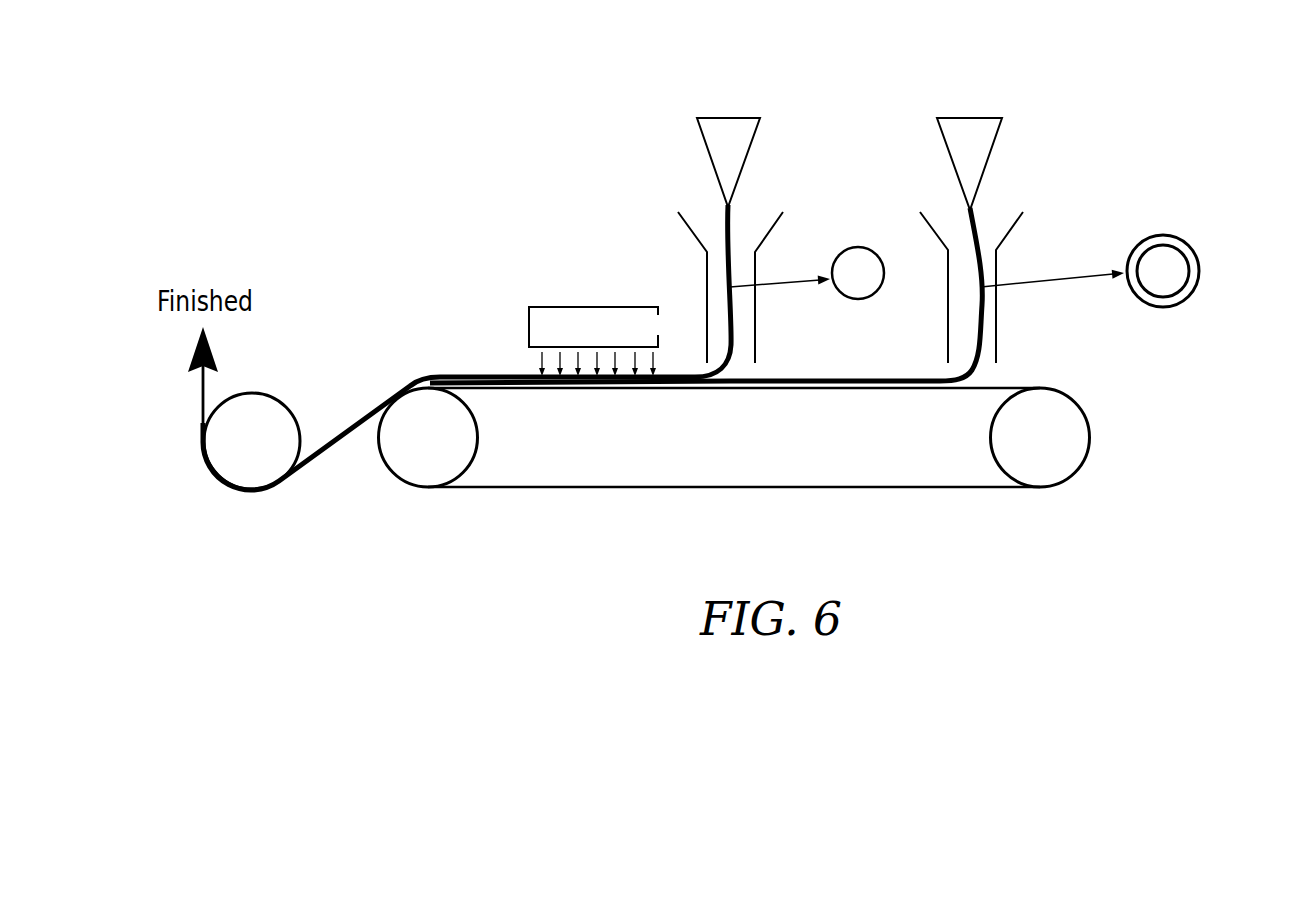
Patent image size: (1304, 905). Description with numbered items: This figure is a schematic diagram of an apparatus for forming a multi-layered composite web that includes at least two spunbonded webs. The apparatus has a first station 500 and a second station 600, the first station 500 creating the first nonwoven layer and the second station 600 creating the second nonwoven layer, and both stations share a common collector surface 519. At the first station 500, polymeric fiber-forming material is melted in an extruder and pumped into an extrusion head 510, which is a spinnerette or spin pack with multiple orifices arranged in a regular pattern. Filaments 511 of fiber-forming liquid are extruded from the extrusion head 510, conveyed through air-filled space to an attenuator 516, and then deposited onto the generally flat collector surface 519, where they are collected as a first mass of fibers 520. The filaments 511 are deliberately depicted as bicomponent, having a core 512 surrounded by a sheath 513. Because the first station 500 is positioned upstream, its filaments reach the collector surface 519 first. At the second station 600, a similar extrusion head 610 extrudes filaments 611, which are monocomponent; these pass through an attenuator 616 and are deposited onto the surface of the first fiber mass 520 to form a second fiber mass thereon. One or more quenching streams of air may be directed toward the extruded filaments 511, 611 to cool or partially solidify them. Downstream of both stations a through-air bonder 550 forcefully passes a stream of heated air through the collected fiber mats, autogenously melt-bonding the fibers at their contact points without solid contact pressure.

The first station 500 is at (1011, 214).
The extrusion head 510 is at (970, 128).
The filaments 511 is at (970, 235).
The core 512 is at (1180, 279).
The sheath 513 is at (1193, 227).
The attenuator 516 is at (996, 333).
The collector surface 519 is at (843, 388).
The first mass of fibers 520 is at (888, 380).
The through-air bonder 550 is at (563, 318).
The second station 600 is at (641, 214).
The extrusion head 610 is at (733, 133).
The filaments 611 is at (727, 228).
The attenuator 616 is at (757, 330).